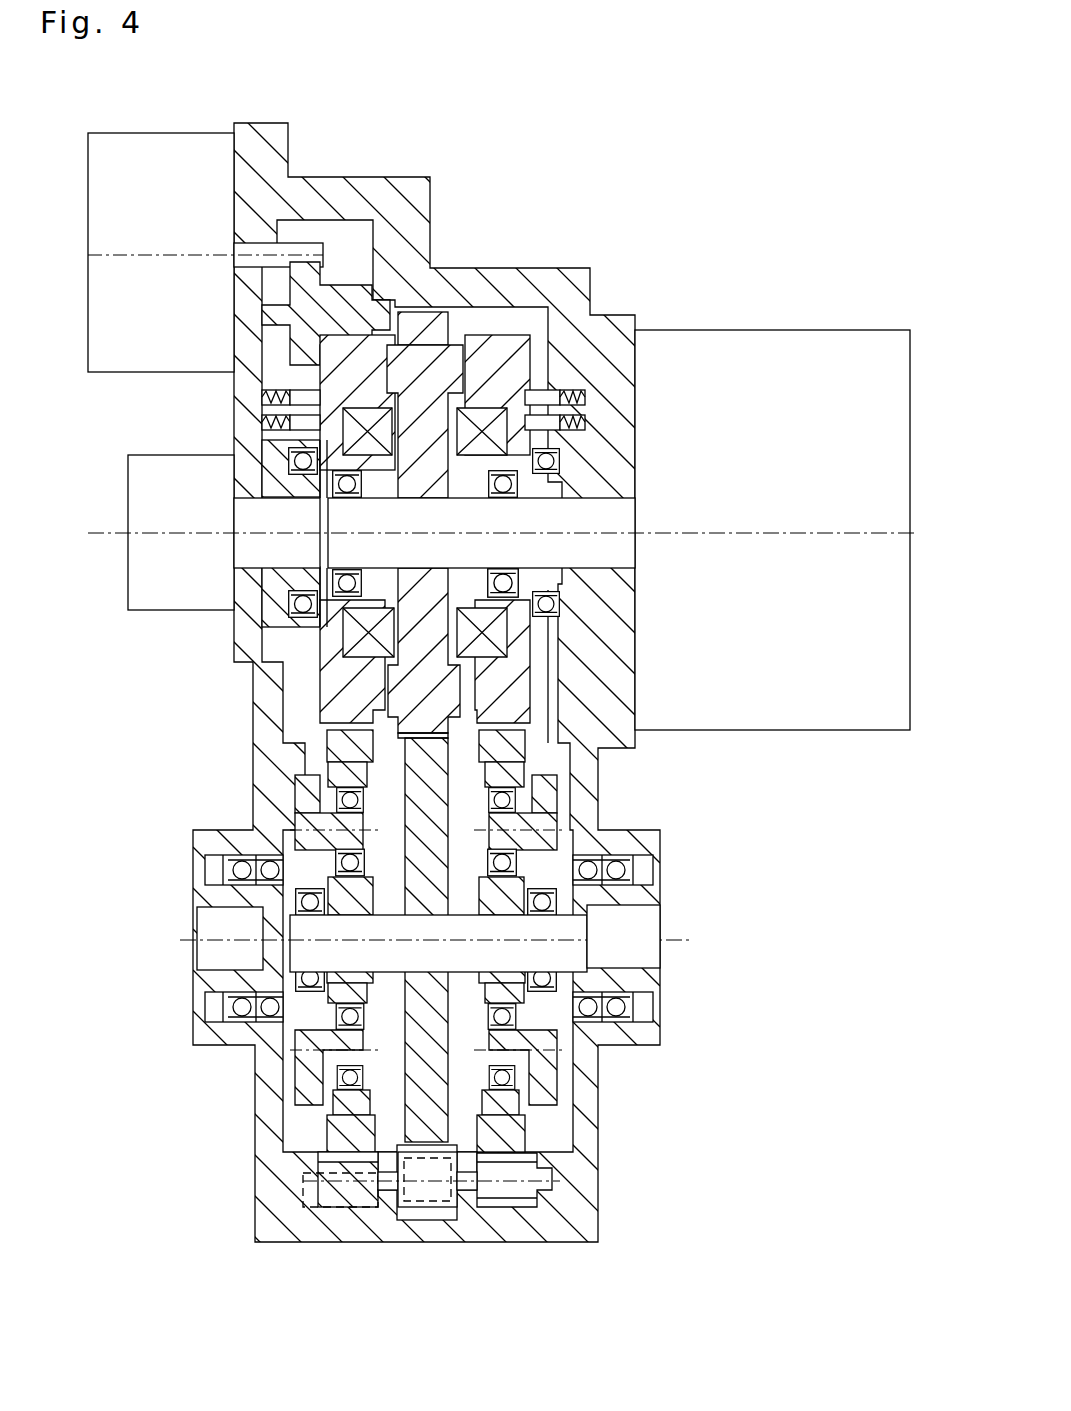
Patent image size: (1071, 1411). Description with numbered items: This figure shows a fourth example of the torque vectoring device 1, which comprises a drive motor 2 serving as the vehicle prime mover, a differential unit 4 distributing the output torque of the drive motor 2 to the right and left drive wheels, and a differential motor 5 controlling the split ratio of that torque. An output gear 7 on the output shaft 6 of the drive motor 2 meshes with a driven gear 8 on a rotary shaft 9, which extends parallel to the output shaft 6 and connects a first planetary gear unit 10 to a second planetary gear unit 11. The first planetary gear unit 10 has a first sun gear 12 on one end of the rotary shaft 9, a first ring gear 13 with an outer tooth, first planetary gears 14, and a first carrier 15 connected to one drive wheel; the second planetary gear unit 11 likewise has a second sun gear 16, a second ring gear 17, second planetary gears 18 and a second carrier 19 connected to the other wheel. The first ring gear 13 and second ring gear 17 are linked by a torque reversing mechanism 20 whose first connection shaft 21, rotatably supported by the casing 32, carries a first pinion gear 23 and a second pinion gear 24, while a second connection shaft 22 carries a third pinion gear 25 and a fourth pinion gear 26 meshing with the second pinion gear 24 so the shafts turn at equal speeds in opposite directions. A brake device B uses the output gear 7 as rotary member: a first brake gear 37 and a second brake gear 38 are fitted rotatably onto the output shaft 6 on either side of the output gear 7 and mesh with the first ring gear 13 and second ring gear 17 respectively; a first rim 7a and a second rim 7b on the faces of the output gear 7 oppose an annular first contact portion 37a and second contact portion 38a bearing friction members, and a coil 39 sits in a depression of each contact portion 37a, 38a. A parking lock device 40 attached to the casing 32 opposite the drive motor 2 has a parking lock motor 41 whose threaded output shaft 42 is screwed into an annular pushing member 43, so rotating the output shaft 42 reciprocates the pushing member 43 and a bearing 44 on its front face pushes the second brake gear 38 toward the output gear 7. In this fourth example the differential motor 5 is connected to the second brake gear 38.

The torque vectoring device 1 is at (678, 162).
The drive motor 2 is at (790, 342).
The differential unit 4 is at (411, 705).
The differential motor 5 is at (152, 152).
The output shaft 6 is at (620, 512).
The output gear 7 is at (392, 710).
The first rim 7a is at (470, 352).
The second rim 7b is at (445, 348).
The driven gear 8 is at (412, 770).
The rotary shaft 9 is at (300, 932).
The first planetary gear unit 10 is at (540, 1118).
The second planetary gear unit 11 is at (305, 1130).
The first sun gear 12 is at (600, 957).
The first ring gear 13 is at (520, 1145).
The first planetary gears 14 is at (515, 1098).
The first carrier 15 is at (545, 1082).
The second sun gear 16 is at (355, 957).
The second ring gear 17 is at (335, 1137).
The second planetary gears 18 is at (340, 1103).
The second carrier 19 is at (300, 1088).
The torque reversing mechanism 20 is at (411, 705).
The first connection shaft 21 is at (470, 1192).
The second connection shaft 22 is at (310, 1196).
The first pinion gear 23 is at (525, 1210).
The second pinion gear 24 is at (405, 1210).
The third pinion gear 25 is at (355, 1196).
The fourth pinion gear 26 is at (435, 1196).
The casing 32 is at (583, 288).
The first brake gear 37 is at (510, 710).
The first contact portion 37a is at (480, 365).
The second brake gear 38 is at (330, 680).
The second contact portion 38a is at (385, 302).
The coil 39 is at (362, 410).
The parking lock device 40 is at (254, 580).
The parking lock motor 41 is at (130, 491).
The output shaft 42 is at (250, 550).
The pushing member 43 is at (278, 470).
The bearing 44 is at (272, 452).
The brake device B is at (542, 362).